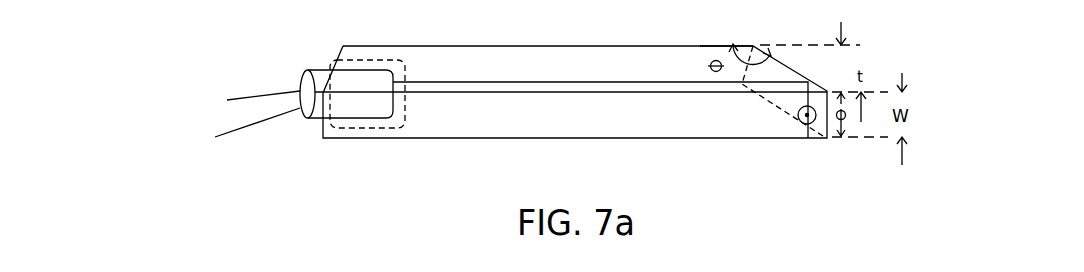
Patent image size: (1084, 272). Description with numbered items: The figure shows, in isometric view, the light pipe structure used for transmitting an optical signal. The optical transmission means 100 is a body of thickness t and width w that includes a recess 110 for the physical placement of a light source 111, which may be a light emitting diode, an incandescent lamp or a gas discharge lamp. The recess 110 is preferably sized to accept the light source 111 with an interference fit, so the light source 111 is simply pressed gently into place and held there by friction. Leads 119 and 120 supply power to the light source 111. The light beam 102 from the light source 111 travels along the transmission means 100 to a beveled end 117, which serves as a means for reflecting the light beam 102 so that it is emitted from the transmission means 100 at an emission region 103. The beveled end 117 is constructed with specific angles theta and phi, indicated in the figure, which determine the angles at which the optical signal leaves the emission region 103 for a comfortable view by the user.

The optical transmission means 100 is at (543, 138).
The light beam 102 is at (610, 81).
The emission region 103 is at (800, 124).
The recess 110 is at (392, 128).
The light source 111 is at (313, 119).
The beveled end 117 is at (710, 45).
The lead 119 is at (243, 95).
The lead 120 is at (282, 115).